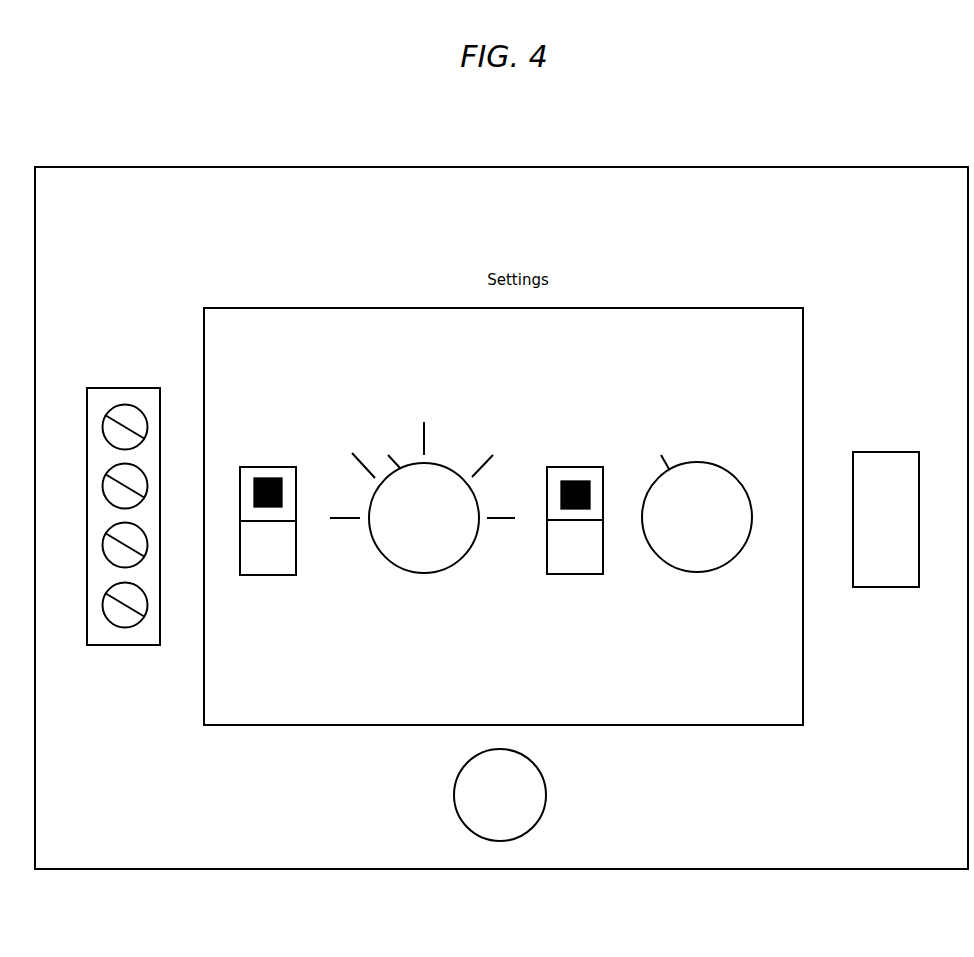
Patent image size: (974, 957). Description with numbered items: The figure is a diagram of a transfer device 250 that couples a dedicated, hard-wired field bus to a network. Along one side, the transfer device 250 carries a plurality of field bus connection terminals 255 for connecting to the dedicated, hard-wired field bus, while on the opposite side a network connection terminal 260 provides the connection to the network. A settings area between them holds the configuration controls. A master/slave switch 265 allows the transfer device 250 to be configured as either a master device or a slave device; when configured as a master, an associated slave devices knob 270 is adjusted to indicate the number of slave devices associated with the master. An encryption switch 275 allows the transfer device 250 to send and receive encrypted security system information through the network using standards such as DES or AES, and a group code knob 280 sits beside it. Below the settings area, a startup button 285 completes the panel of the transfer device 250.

The transfer device 250 is at (333, 167).
The field bus connection terminals 255 is at (132, 712).
The network connection terminal 260 is at (892, 648).
The master/slave switch 265 is at (274, 622).
The associated slave devices knob 270 is at (435, 632).
The encryption switch 275 is at (577, 631).
The group code knob 280 is at (697, 633).
The startup button 285 is at (548, 793).